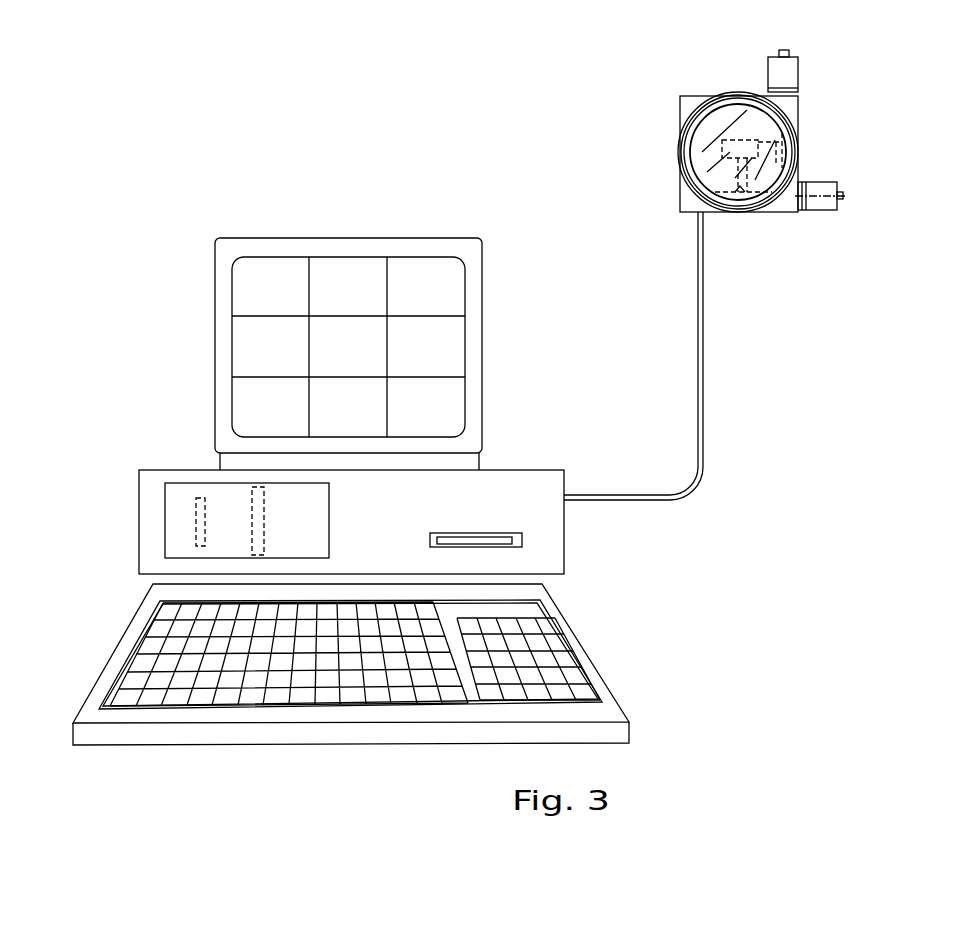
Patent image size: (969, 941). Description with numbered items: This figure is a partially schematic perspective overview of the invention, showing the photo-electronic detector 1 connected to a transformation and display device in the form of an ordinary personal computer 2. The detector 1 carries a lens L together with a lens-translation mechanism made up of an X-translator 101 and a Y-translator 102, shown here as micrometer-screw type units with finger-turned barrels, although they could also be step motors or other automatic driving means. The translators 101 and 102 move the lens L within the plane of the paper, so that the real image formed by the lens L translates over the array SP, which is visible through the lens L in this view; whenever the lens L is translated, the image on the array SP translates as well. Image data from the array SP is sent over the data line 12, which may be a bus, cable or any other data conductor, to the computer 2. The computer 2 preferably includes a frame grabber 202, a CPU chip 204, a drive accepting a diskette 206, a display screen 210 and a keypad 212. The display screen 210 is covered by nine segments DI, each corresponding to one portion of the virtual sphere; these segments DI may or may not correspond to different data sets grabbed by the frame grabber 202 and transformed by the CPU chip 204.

The photo-electronic detector 1 is at (687, 90).
The personal computer 2 is at (192, 328).
The data line 12 is at (707, 323).
The X-translator 101 is at (826, 205).
The Y-translator 102 is at (795, 67).
The frame grabber 202 is at (257, 543).
The CPU chip 204 is at (195, 509).
The diskette 206 is at (513, 543).
The display screen 210 is at (375, 243).
The keypad 212 is at (578, 636).
The lens L is at (703, 134).
The array SP is at (727, 148).
The segments DI is at (438, 342).